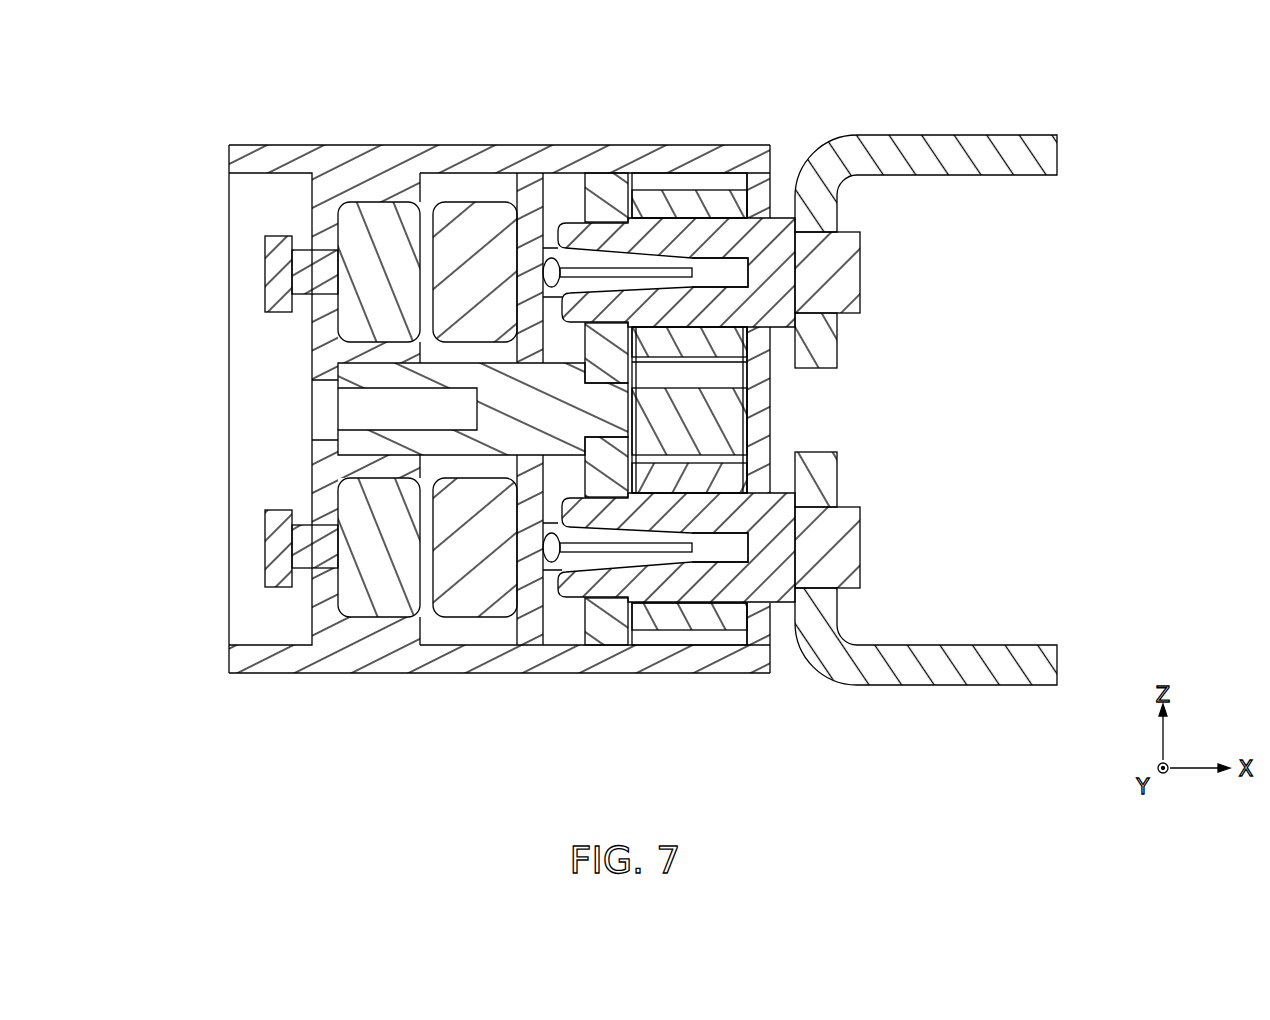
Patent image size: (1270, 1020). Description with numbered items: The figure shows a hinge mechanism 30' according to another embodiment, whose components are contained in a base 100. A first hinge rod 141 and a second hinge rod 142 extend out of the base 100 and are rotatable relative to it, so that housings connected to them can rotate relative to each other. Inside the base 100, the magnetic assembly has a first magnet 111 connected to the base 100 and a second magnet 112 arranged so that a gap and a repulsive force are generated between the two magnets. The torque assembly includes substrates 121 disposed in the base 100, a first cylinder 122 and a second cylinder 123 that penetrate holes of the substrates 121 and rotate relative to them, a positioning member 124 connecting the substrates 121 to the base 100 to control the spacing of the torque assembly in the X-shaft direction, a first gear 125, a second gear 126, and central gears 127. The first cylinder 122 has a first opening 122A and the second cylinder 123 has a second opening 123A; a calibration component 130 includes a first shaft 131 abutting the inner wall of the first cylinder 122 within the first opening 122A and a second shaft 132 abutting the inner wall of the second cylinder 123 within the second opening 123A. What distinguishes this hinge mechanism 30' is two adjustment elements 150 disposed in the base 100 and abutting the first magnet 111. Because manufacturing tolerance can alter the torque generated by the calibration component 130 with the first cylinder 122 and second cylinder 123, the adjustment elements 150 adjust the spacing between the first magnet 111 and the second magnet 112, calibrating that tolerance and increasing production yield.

The hinge mechanism 30' is at (425, 361).
The base 100 is at (244, 150).
The first magnet 111 is at (383, 228).
The second magnet 112 is at (477, 222).
The substrate 121 is at (607, 197).
The first cylinder 122 is at (757, 186).
The first opening 122A is at (758, 272).
The second cylinder 123 is at (855, 566).
The second opening 123A is at (758, 548).
The positioning member 124 is at (395, 440).
The first gear 125 is at (703, 198).
The second gear 126 is at (703, 618).
The central gear 127 is at (725, 410).
The calibration component 130 is at (530, 192).
The first shaft 131 is at (652, 260).
The second shaft 132 is at (652, 555).
The first hinge rod 141 is at (1020, 140).
The second hinge rod 142 is at (1020, 648).
The adjustment element 150 is at (268, 263).